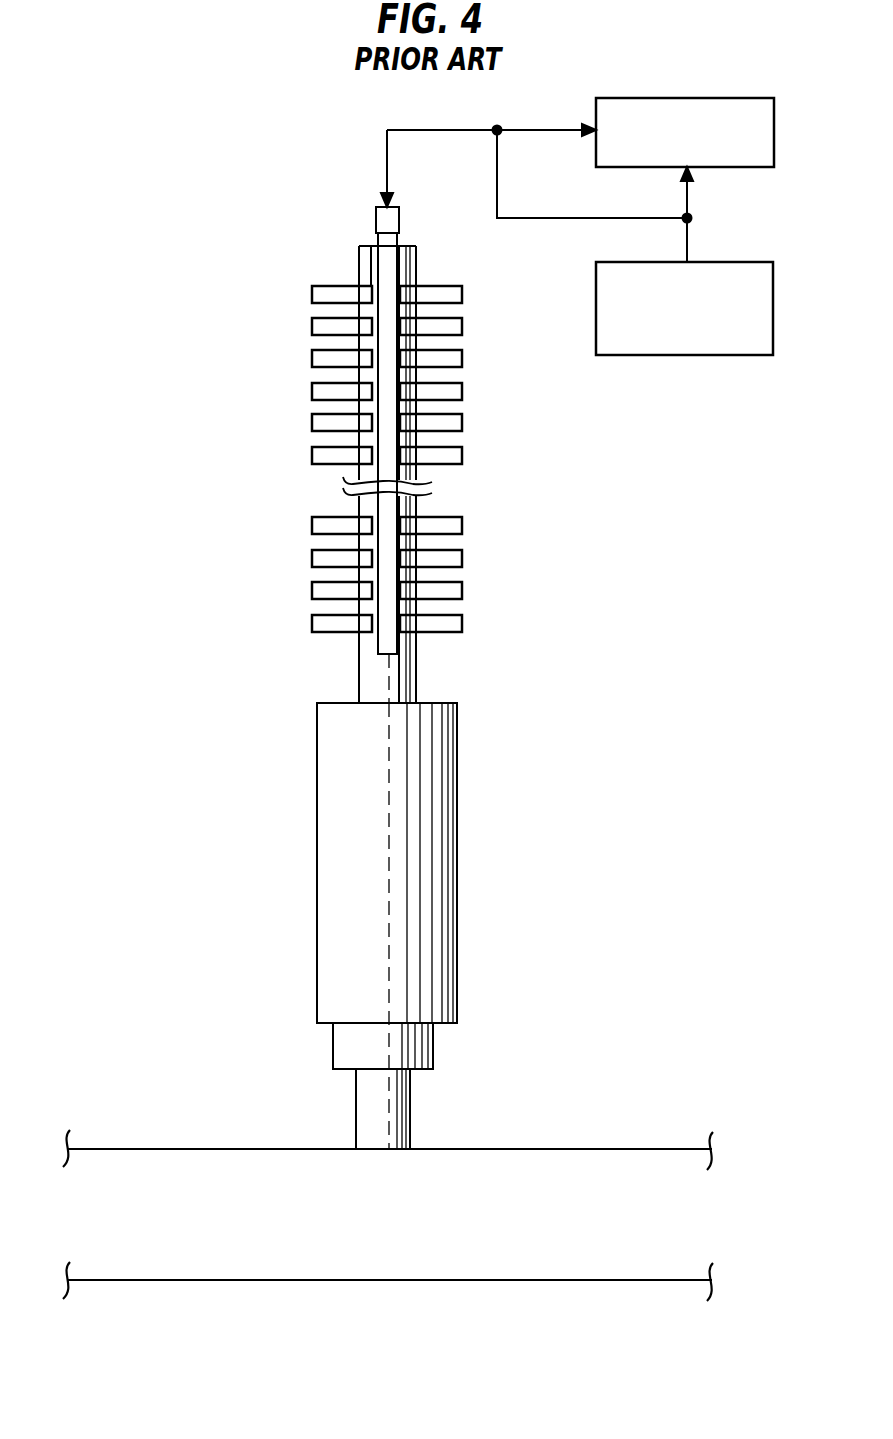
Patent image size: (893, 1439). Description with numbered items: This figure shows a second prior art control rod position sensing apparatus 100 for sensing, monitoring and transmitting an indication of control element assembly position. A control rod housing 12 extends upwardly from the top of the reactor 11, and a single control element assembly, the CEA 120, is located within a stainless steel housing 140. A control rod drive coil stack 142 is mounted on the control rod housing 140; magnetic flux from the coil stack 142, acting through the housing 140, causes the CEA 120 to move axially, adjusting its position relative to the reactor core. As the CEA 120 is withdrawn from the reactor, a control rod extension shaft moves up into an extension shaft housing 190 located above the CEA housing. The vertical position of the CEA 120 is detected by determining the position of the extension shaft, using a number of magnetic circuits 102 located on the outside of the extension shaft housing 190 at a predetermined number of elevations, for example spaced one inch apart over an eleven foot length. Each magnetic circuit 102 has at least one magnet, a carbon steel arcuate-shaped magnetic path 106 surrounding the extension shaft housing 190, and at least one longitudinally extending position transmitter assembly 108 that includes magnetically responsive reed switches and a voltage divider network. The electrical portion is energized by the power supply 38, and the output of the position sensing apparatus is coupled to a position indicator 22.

The apparatus 100 is at (268, 157).
The magnetic circuits 102 is at (268, 408).
The magnetic path 106 is at (312, 523).
The position transmitter assembly 108 is at (397, 267).
The extension shaft housing 190 is at (417, 665).
The control rod housing 12 is at (292, 872).
The control rod drive coil stack 142 is at (453, 883).
The housing 140 is at (433, 1047).
The control element assembly 120 is at (410, 1125).
The reactor 11 is at (563, 1150).
The position indicator 22 is at (723, 97).
The power supply 38 is at (720, 262).